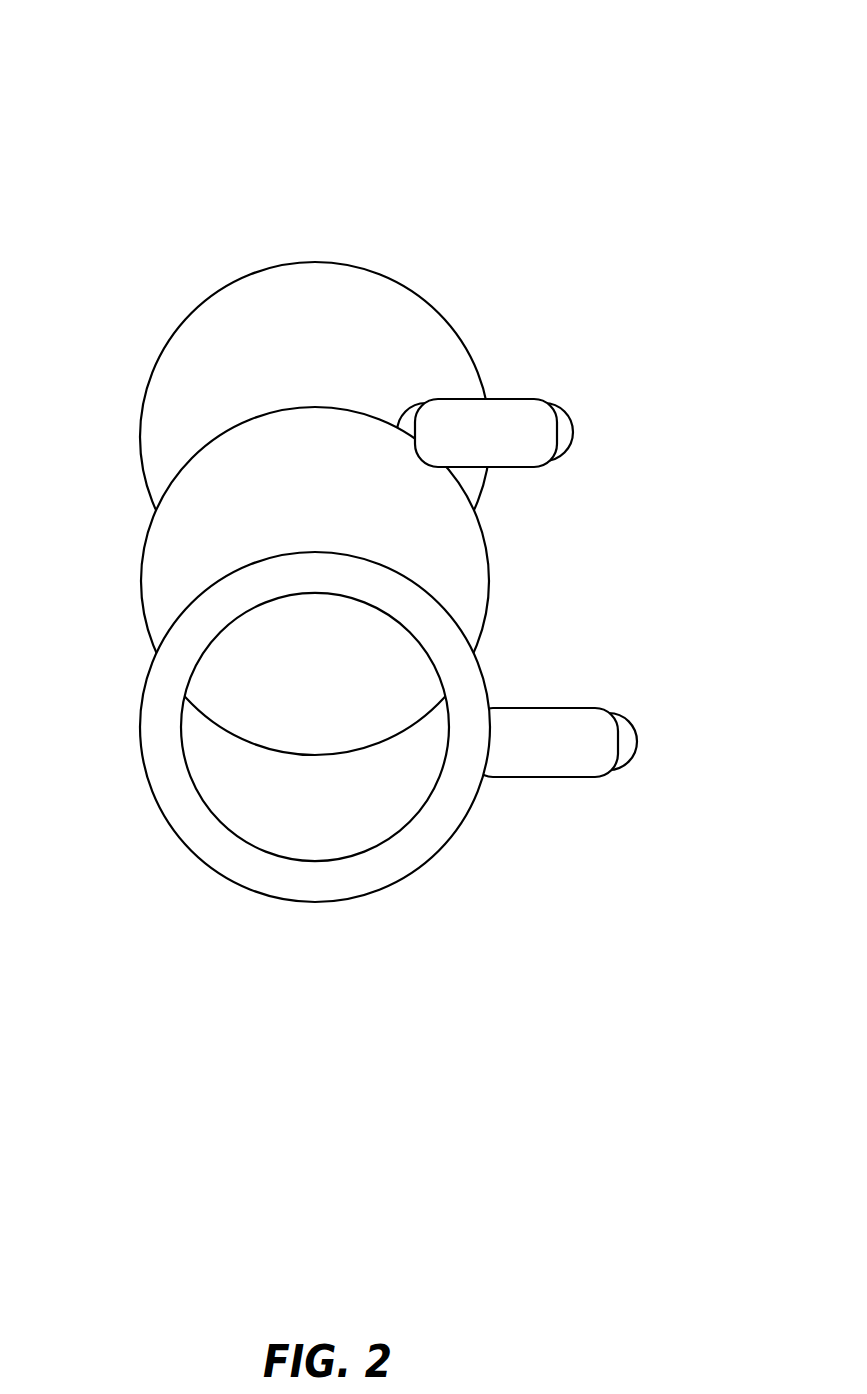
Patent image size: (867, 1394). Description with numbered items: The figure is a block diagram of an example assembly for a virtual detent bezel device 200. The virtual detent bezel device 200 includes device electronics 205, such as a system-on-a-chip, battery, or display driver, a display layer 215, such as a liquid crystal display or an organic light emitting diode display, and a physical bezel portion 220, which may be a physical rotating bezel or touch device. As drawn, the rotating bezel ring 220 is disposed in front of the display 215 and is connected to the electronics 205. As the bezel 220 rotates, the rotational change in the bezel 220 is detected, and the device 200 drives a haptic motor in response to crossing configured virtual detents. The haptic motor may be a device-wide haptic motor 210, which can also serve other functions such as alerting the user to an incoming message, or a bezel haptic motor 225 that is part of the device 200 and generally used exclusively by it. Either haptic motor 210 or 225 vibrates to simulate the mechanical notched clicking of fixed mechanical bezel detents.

The virtual detent bezel device 200 is at (645, 30).
The device electronics 205 is at (140, 433).
The device-wide haptic motor 210 is at (386, 644).
The display layer 215 is at (140, 580).
The physical bezel portion 220 is at (139, 740).
The bezel haptic motor 225 is at (637, 741).